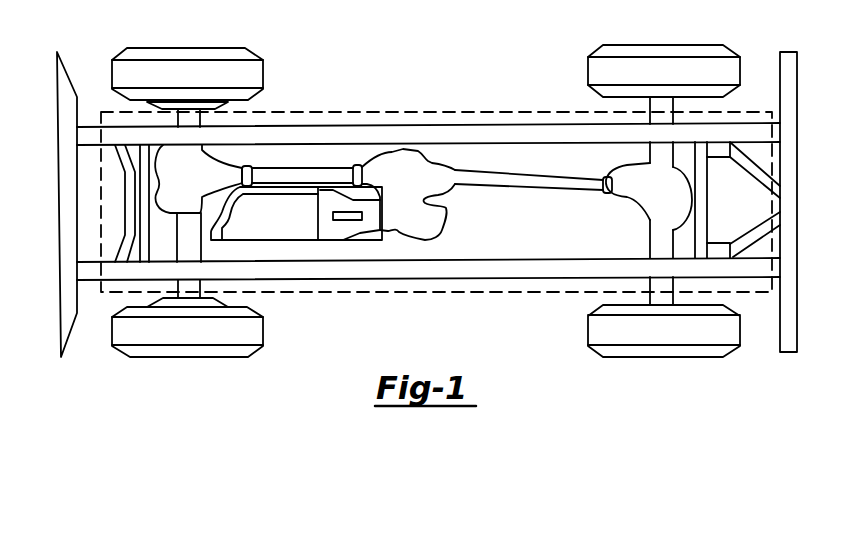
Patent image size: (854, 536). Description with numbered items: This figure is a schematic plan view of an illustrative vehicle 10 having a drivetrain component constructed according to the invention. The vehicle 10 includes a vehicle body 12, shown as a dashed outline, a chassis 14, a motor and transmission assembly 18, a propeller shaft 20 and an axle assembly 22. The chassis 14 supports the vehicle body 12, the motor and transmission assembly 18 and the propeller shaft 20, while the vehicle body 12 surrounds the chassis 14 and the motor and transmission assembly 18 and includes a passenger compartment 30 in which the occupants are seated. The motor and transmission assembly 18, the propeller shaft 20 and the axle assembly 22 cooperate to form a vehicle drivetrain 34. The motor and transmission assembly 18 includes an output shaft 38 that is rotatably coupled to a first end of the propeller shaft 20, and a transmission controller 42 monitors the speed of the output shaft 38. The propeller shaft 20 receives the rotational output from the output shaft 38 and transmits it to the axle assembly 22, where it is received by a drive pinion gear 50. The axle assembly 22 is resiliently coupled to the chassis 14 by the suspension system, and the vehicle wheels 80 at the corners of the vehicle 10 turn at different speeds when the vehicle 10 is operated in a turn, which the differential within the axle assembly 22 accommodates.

The vehicle 10 is at (373, 54).
The vehicle body 12 is at (373, 294).
The chassis 14 is at (503, 272).
The motor and transmission assembly 18 is at (274, 236).
The propeller shaft 20 is at (510, 180).
The axle assembly 22 is at (660, 247).
The passenger compartment 30 is at (548, 234).
The vehicle drivetrain 34 is at (318, 158).
The output shaft 38 is at (448, 187).
The transmission controller 42 is at (319, 208).
The drive pinion gear 50 is at (628, 174).
The vehicle wheels 80 is at (687, 338).